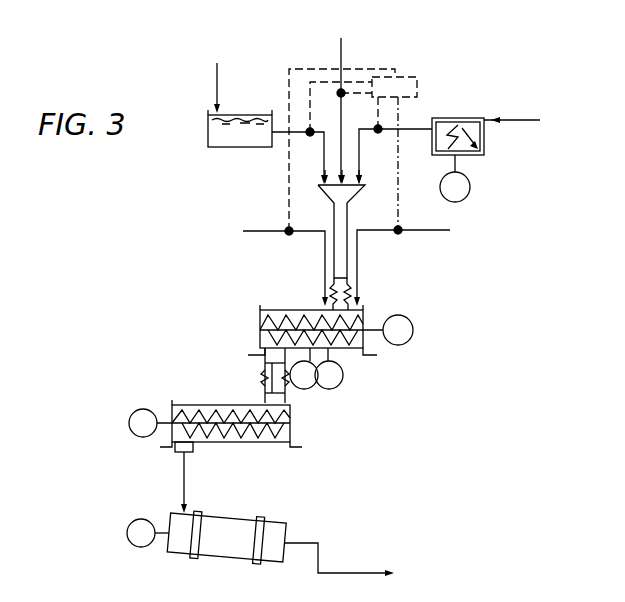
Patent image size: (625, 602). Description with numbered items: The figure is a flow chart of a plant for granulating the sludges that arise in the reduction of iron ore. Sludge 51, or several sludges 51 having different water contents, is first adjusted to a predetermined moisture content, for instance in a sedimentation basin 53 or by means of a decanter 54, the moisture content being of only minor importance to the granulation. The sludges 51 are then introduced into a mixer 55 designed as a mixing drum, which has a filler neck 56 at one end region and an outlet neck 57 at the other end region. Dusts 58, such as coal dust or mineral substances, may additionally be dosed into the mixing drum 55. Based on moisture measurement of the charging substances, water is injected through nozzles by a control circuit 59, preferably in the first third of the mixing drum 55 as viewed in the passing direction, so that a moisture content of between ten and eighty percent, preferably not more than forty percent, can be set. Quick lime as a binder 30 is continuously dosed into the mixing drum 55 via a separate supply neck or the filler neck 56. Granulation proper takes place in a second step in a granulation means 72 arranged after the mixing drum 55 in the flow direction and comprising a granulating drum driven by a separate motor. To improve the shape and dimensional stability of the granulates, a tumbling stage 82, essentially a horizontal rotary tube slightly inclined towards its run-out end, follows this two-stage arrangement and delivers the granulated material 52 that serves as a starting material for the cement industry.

The binder 30 is at (341, 56).
The sludge 51 is at (226, 76).
The granulated material 52 is at (350, 572).
The sedimentation basin 53 is at (226, 147).
The decanter 54 is at (484, 152).
The mixer 55 is at (300, 310).
The filler neck 56 is at (362, 305).
The outlet neck 57 is at (272, 357).
The dusts 58 is at (420, 231).
The control circuit 59 is at (418, 85).
The granulation means 72 is at (238, 444).
The tumbling stage 82 is at (283, 523).